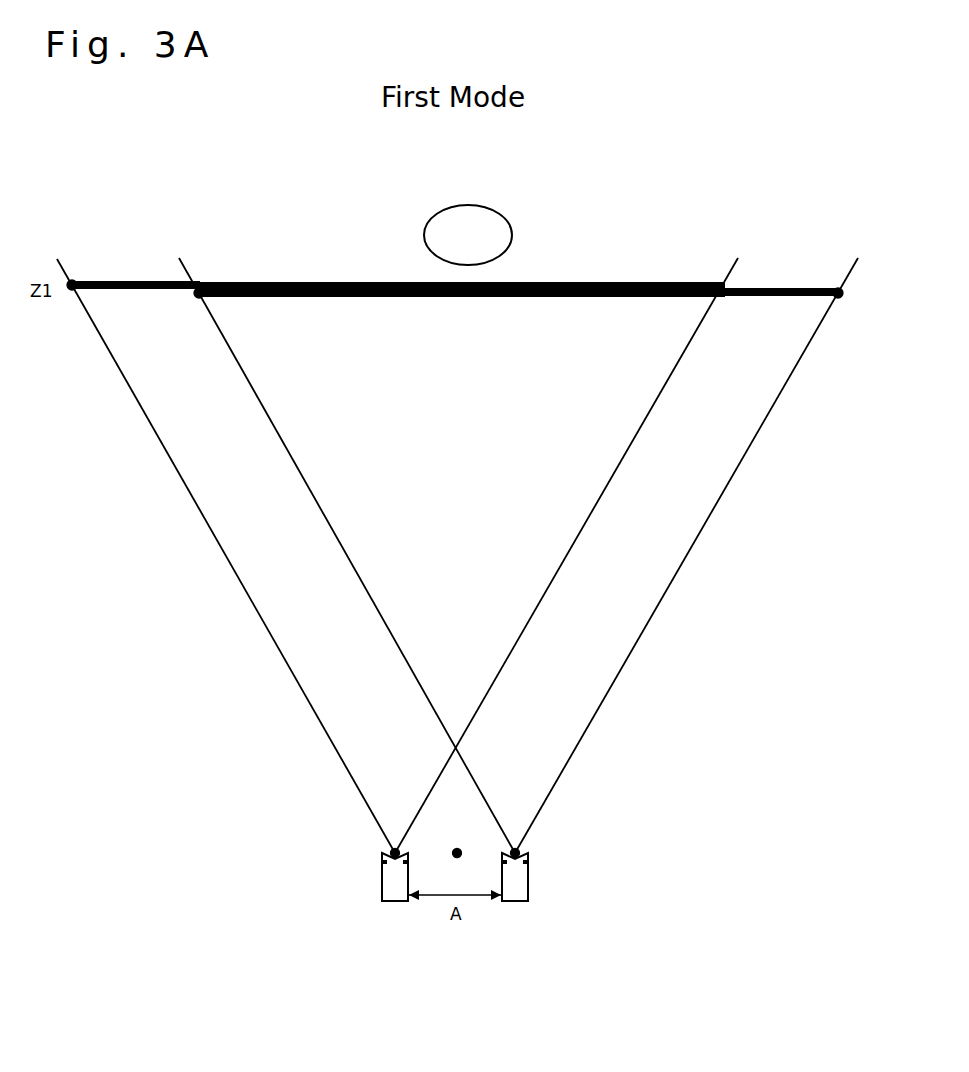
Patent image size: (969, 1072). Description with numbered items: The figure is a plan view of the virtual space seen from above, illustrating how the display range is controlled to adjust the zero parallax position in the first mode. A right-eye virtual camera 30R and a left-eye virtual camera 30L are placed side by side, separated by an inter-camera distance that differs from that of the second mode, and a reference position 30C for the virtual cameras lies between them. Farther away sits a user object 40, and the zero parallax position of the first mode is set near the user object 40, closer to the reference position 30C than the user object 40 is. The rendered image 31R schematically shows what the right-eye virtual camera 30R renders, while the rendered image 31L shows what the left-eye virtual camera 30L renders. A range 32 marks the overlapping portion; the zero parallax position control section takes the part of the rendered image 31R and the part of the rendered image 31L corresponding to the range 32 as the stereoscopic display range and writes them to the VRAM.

The left-eye virtual camera 30L is at (397, 902).
The right-eye virtual camera 30R is at (516, 902).
The reference position for the virtual cameras 30C is at (458, 869).
The image rendered using the left-eye virtual camera in the first mode 31L is at (162, 282).
The image rendered using the right-eye virtual camera in the first mode 31R is at (794, 288).
The range 32 is at (713, 304).
The user object 40 is at (488, 218).